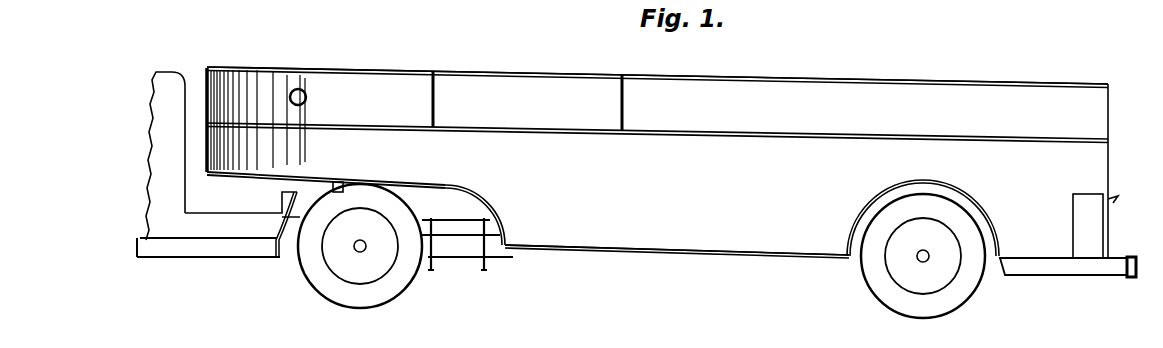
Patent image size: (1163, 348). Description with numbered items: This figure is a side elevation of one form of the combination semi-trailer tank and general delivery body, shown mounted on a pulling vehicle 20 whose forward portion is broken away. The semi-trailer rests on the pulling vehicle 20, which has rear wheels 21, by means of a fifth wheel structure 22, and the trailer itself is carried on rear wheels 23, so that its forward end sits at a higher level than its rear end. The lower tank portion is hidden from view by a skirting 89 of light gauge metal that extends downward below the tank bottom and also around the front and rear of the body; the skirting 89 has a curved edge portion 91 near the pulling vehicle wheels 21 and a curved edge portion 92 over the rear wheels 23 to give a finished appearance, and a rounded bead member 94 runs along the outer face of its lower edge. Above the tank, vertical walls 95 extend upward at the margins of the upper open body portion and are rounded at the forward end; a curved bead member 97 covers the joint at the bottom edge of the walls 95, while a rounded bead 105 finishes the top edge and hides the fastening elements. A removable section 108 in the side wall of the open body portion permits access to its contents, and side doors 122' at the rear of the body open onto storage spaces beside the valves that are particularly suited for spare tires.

The pulling vehicle 20 is at (213, 236).
The rear wheels 21 is at (377, 272).
The fifth wheel structure 22 is at (333, 186).
The rear wheels 23 is at (950, 272).
The skirting 89 is at (237, 166).
The curved edge portion 91 is at (465, 190).
The curved edge portion 92 is at (933, 180).
The rounded bead member 94 is at (705, 250).
The vertical walls 95 is at (220, 82).
The curved bead member 97 is at (945, 138).
The rounded bead 105 is at (900, 82).
The removable section 108 is at (545, 86).
The side doors 122' is at (1110, 226).